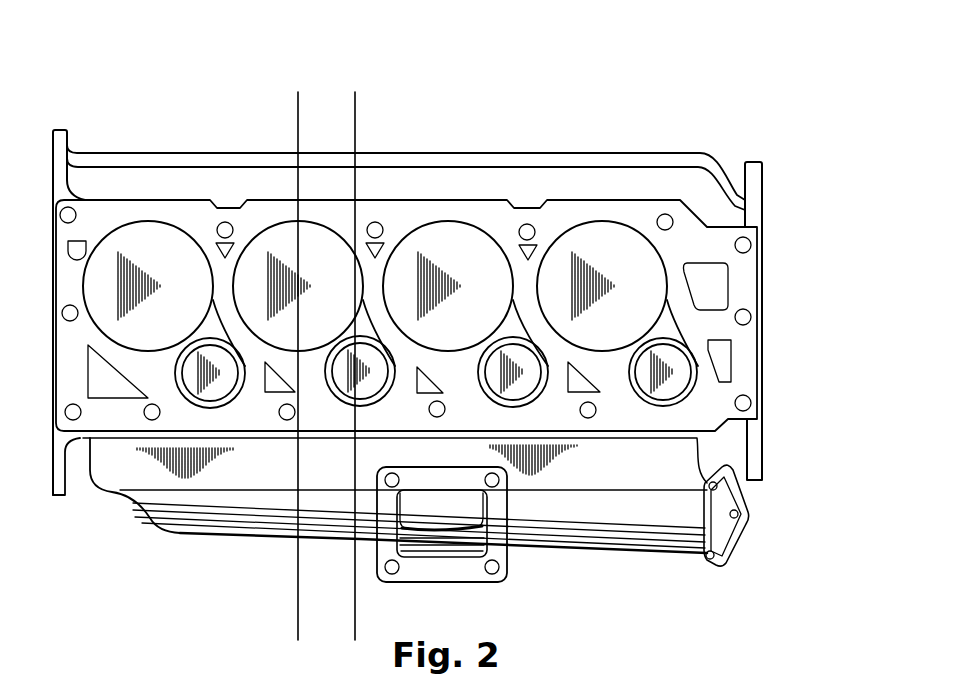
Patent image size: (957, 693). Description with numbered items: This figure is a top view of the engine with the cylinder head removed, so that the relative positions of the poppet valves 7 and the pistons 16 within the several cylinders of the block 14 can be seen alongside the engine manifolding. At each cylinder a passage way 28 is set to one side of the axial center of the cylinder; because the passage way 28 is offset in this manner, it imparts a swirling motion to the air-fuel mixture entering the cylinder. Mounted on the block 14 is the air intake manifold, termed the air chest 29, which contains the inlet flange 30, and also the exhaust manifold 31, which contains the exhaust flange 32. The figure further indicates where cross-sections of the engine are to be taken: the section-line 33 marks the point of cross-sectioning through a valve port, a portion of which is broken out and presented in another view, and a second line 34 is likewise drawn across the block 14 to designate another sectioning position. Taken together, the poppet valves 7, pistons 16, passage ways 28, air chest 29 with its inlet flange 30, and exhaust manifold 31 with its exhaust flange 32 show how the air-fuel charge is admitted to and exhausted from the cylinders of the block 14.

The poppet valve 7 is at (103, 330).
The block 14 is at (767, 463).
The piston 16 is at (165, 268).
The passage way 28 is at (165, 372).
The air chest 29 is at (208, 478).
The inlet flange 30 is at (510, 570).
The exhaust manifold 31 is at (643, 553).
The exhaust flange 32 is at (727, 560).
The section-line 33 is at (355, 112).
The reference line 34 is at (298, 112).